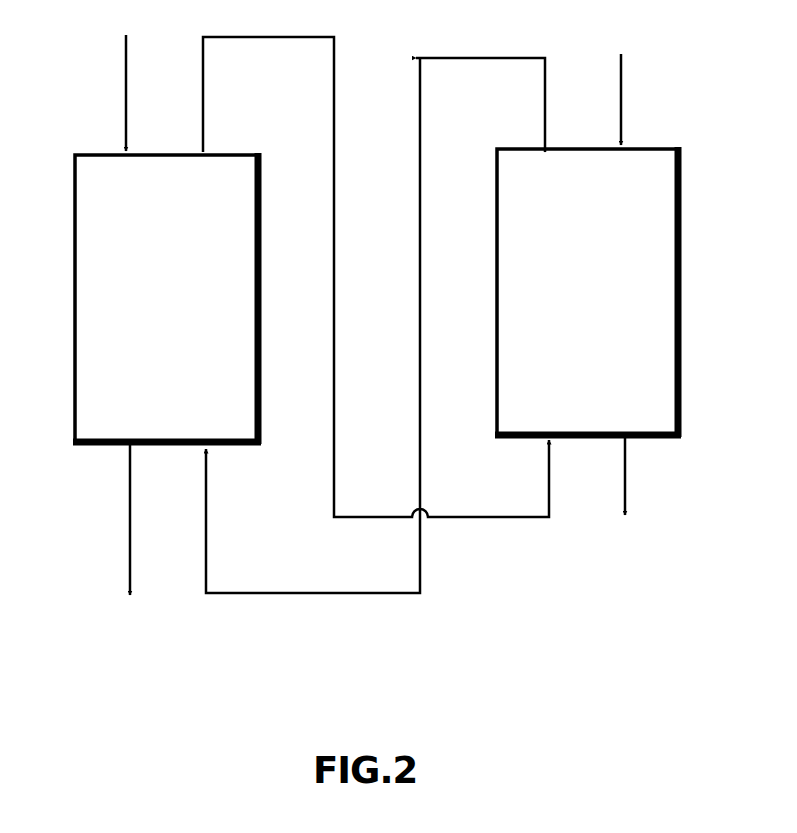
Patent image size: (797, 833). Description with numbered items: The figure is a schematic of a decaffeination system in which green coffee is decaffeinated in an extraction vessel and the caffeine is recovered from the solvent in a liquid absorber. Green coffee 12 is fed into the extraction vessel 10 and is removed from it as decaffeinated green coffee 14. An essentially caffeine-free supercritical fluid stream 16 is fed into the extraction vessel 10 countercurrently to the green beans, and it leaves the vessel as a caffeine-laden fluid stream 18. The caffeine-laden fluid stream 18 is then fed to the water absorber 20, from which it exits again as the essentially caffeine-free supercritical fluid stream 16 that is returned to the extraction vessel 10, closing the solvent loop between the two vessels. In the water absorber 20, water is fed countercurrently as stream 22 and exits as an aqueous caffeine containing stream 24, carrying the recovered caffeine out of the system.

The extraction vessel 10 is at (70, 228).
The green coffee 12 is at (126, 111).
The decaffeinated green coffee 14 is at (130, 535).
The essentially caffeine-free supercritical fluid stream 16 is at (206, 535).
The caffeine-laden fluid stream 18 is at (203, 111).
The water absorber 20 is at (690, 227).
The water stream 22 is at (621, 111).
The aqueous caffeine containing stream 24 is at (625, 491).